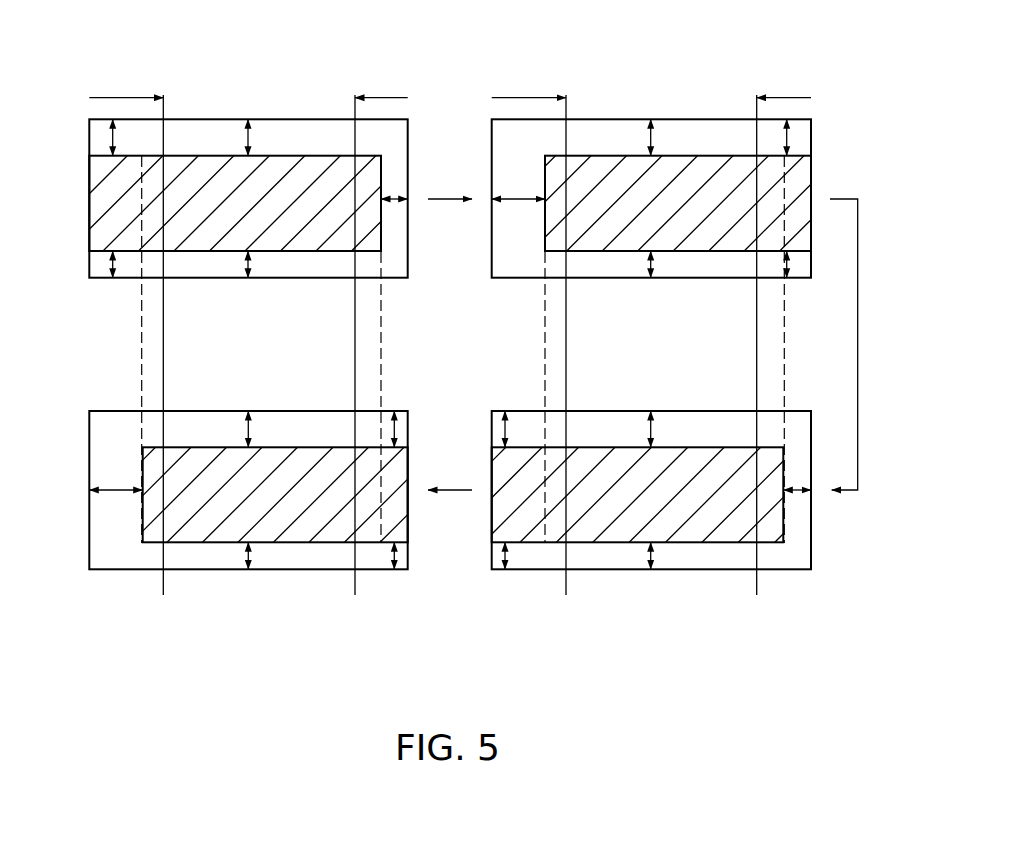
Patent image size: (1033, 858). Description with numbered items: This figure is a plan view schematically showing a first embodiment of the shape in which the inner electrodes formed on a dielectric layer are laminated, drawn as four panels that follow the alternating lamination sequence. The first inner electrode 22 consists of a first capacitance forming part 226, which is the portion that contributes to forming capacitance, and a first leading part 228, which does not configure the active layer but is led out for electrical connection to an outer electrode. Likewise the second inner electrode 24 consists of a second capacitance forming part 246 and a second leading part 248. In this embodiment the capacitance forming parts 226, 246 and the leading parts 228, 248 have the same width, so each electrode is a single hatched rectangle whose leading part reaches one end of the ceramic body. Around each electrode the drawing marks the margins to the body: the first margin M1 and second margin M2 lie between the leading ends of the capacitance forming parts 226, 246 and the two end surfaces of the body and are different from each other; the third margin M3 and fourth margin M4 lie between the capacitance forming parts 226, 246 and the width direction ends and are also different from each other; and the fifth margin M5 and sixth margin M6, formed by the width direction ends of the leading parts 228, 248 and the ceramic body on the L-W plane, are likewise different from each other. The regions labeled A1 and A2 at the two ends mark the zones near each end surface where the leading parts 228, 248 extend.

The first inner electrode 22 is at (273, 40).
The first capacitance forming part 226 is at (207, 177).
The first leading part 228 is at (125, 178).
The second inner electrode 24 is at (723, 40).
The second capacitance forming part 246 is at (693, 175).
The second leading part 248 is at (793, 185).
The first margin M1 is at (395, 196).
The second margin M2 is at (508, 198).
The third margin M3 is at (250, 137).
The fourth margin M4 is at (247, 265).
The fifth margin M5 is at (110, 137).
The sixth margin M6 is at (110, 267).
The first region A1 is at (327, 334).
The second region A2 is at (583, 334).